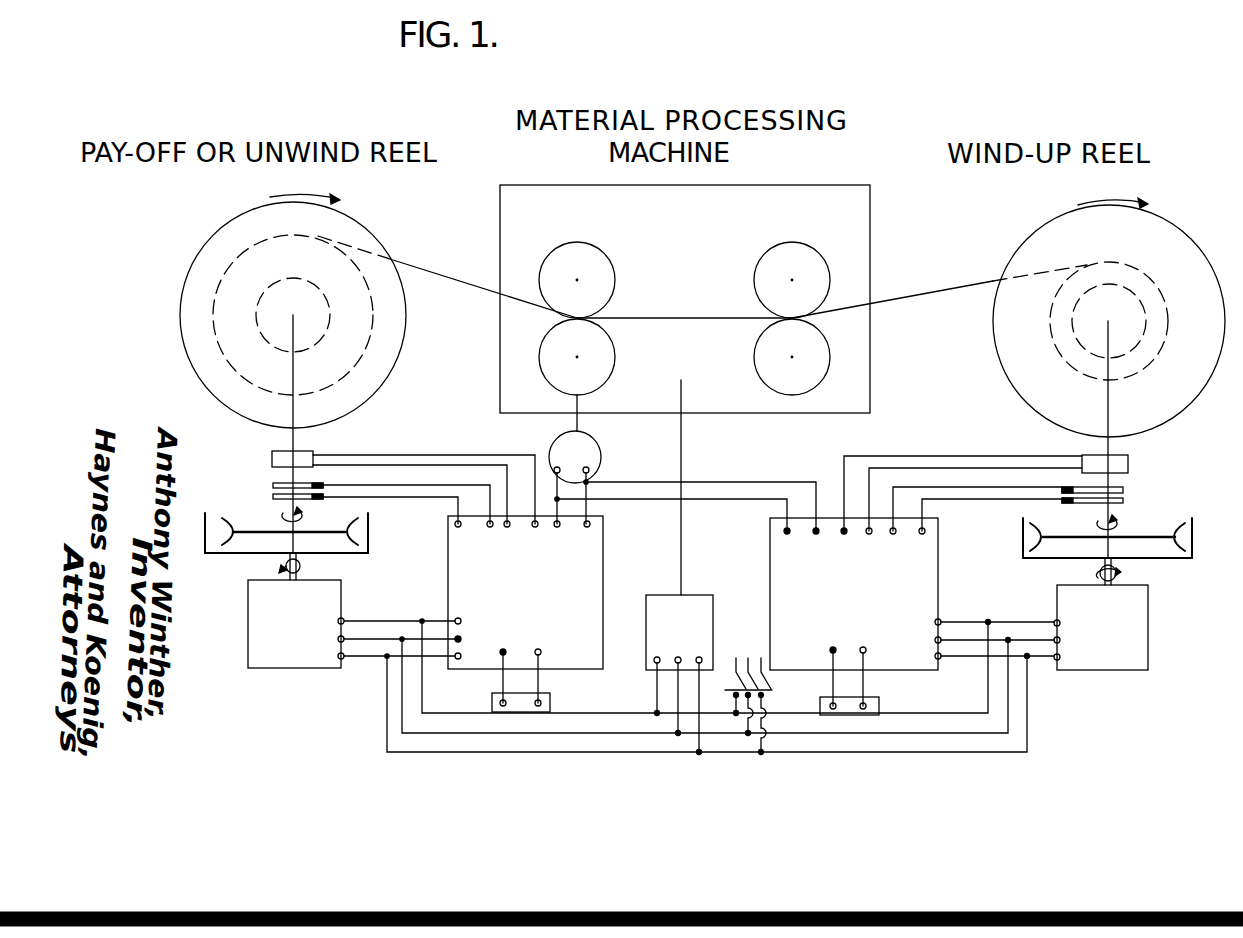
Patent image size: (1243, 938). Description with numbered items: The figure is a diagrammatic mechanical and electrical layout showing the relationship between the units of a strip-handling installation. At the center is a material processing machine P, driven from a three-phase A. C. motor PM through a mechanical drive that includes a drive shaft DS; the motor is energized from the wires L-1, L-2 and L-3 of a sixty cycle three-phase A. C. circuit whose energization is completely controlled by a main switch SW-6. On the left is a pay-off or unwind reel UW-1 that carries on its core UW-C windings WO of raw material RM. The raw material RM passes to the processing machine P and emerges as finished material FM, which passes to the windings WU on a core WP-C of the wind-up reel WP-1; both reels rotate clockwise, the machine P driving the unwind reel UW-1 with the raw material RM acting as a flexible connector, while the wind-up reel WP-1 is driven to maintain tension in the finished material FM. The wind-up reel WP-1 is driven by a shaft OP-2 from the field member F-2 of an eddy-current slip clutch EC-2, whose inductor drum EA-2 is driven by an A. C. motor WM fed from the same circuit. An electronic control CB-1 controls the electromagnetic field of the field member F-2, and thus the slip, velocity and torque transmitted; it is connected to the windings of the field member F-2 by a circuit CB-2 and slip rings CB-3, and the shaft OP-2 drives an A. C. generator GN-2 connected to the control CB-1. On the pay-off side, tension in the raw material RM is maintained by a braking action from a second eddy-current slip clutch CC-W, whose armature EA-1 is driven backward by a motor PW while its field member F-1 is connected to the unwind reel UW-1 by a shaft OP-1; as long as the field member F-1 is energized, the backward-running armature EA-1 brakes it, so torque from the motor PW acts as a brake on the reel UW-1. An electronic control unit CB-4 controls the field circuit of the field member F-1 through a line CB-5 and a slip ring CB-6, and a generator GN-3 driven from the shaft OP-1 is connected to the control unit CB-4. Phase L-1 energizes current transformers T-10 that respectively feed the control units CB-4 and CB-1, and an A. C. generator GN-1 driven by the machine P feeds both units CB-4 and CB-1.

The pay-off or unwind reel UW-1 is at (213, 240).
The core of unwind reel UW-C is at (312, 287).
The windings of raw material WO is at (213, 296).
The raw material RM is at (461, 283).
The shaft OP-1 is at (294, 408).
The material processing machine P is at (594, 227).
The A. C. generator GN-1 is at (585, 445).
The drive shaft DS is at (683, 550).
The finished material FM is at (942, 297).
The wind-up or finished-material reel WP-1 is at (1170, 222).
The windings of finished material WU is at (1161, 291).
The core of wind-up reel WP-C is at (1146, 328).
The shaft OP-2 is at (1109, 399).
The generator GN-3 is at (270, 458).
The slip ring CB-6 is at (272, 487).
The line CB-5 is at (406, 504).
The field member F-1 is at (286, 530).
The second eddy-current slip clutch CC-W is at (247, 552).
The armature EA-1 is at (375, 555).
The motor PW is at (351, 624).
The electronic control unit CB-4 is at (525, 592).
The current transformers T-10 is at (552, 708).
The three-phase A. C. motor PM is at (679, 675).
The wire L-1 is at (637, 706).
The wire L-2 is at (628, 735).
The wire L-3 is at (624, 752).
The main switch SW-6 is at (774, 706).
The electronic control CB-1 is at (878, 636).
The circuit CB-2 is at (975, 478).
The A. C. generator GN-2 is at (1128, 458).
The slip rings CB-3 is at (1124, 495).
The field member F-2 is at (1160, 535).
The eddy-current slip clutch EC-2 is at (1023, 538).
The inductor drum EA-2 is at (1170, 565).
The A. C. motor WM is at (1101, 627).